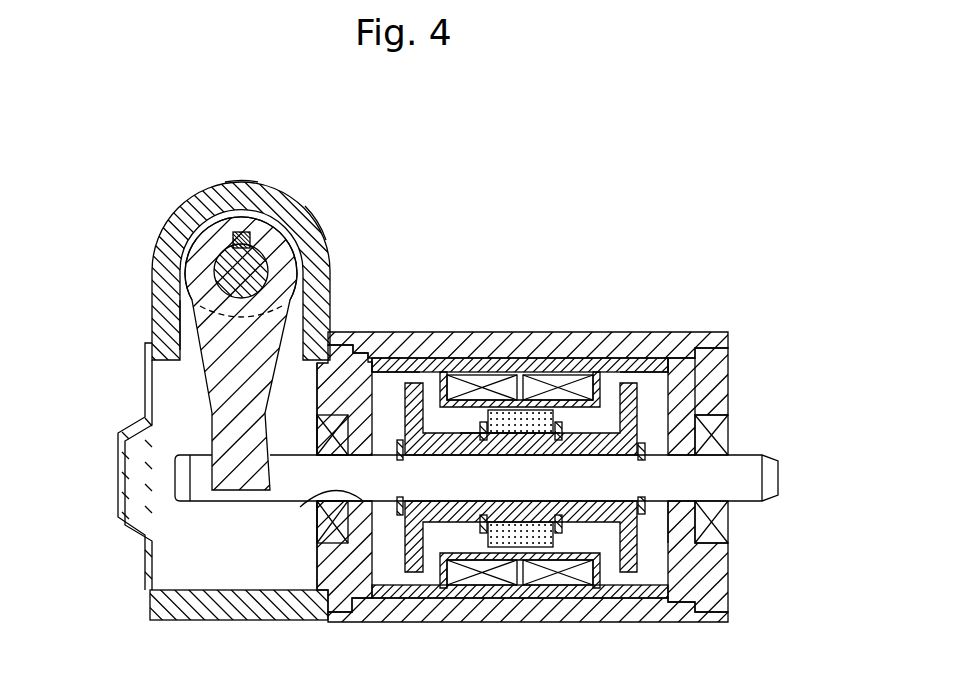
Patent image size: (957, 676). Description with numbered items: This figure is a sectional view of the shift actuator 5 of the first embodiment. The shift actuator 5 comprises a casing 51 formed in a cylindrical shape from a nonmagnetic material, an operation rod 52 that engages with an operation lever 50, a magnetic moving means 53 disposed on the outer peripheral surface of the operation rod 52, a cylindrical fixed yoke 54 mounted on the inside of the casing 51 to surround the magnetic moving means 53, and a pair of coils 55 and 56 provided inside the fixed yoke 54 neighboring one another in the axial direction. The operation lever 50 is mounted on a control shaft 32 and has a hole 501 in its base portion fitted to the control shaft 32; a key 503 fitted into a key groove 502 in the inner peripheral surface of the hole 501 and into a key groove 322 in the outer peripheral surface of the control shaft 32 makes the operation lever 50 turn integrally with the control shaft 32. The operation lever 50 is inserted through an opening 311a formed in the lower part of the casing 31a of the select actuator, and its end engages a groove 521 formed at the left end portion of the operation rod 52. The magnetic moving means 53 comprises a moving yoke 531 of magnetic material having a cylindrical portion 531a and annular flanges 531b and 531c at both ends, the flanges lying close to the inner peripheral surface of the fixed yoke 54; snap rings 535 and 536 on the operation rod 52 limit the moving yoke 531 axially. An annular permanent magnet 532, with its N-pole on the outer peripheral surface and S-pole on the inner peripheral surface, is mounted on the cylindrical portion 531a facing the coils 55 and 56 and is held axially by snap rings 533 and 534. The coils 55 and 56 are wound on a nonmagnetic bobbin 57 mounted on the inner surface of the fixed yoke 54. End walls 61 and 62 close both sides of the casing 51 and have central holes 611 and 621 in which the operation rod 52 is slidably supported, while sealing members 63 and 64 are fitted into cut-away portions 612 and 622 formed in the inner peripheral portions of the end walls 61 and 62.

The shift actuator 5 is at (560, 255).
The operation lever 50 is at (212, 415).
The casing 51 is at (612, 338).
The operation rod 52 is at (752, 456).
The magnetic moving means 53 is at (400, 408).
The fixed yoke 54 is at (478, 345).
The coil 55 is at (576, 368).
The coil 56 is at (496, 375).
The bobbin 57 is at (525, 375).
The end wall 61 is at (720, 370).
The end wall 62 is at (322, 388).
The sealing member 63 is at (722, 440).
The sealing member 64 is at (318, 442).
The control shaft 32 is at (183, 264).
The casing 31a is at (264, 181).
The key groove 322 is at (217, 270).
The opening 311a is at (187, 327).
The hole 501 is at (318, 222).
The key groove 502 is at (252, 226).
The key 503 is at (238, 232).
The groove 521 is at (222, 497).
The moving yoke 531 is at (443, 430).
The cylindrical portion 531a is at (500, 447).
The annular flange 531b is at (672, 352).
The annular flange 531c is at (410, 362).
The permanent magnet 532 is at (547, 427).
The snap ring 533 is at (563, 428).
The snap ring 534 is at (481, 432).
The snap ring 535 is at (648, 453).
The snap ring 536 is at (397, 455).
The hole 611 is at (680, 506).
The cut-away portion 612 is at (705, 410).
The hole 621 is at (312, 498).
The cut-away portion 622 is at (320, 405).